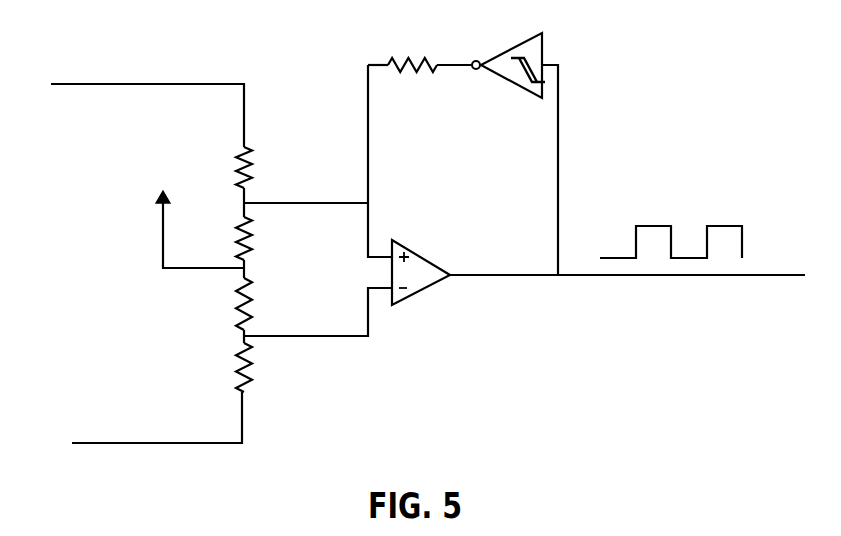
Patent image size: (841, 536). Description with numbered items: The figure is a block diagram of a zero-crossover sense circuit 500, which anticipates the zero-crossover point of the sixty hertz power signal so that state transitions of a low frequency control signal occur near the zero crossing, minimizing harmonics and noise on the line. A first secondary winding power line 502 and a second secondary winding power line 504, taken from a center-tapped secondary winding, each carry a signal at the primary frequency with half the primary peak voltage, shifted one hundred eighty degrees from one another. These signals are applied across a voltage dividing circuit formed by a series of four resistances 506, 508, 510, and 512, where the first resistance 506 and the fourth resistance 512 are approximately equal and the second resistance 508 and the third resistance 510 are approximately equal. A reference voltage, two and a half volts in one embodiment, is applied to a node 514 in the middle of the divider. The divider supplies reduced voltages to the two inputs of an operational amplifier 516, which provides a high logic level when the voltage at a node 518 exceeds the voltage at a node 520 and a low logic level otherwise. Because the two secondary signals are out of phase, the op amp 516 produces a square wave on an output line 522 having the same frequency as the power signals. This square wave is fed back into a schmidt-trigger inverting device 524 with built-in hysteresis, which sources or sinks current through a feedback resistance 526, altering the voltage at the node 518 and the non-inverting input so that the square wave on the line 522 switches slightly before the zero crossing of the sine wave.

The zero-crossover sense circuit 500 is at (618, 80).
The secondary winding power 1 line 502 is at (136, 86).
The secondary winding power 2 line 504 is at (137, 441).
The resistance R1-A 506 is at (250, 162).
The resistance R2-A 508 is at (239, 238).
The resistance R2-B 510 is at (238, 305).
The resistance R1-B 512 is at (249, 390).
The node 514 is at (250, 268).
The operational amplifier 516 is at (405, 244).
The node 518 is at (240, 203).
The node 520 is at (238, 337).
The line 522 is at (512, 278).
The schmidt-trigger inverting device 524 is at (506, 56).
The resistance R3 526 is at (408, 57).